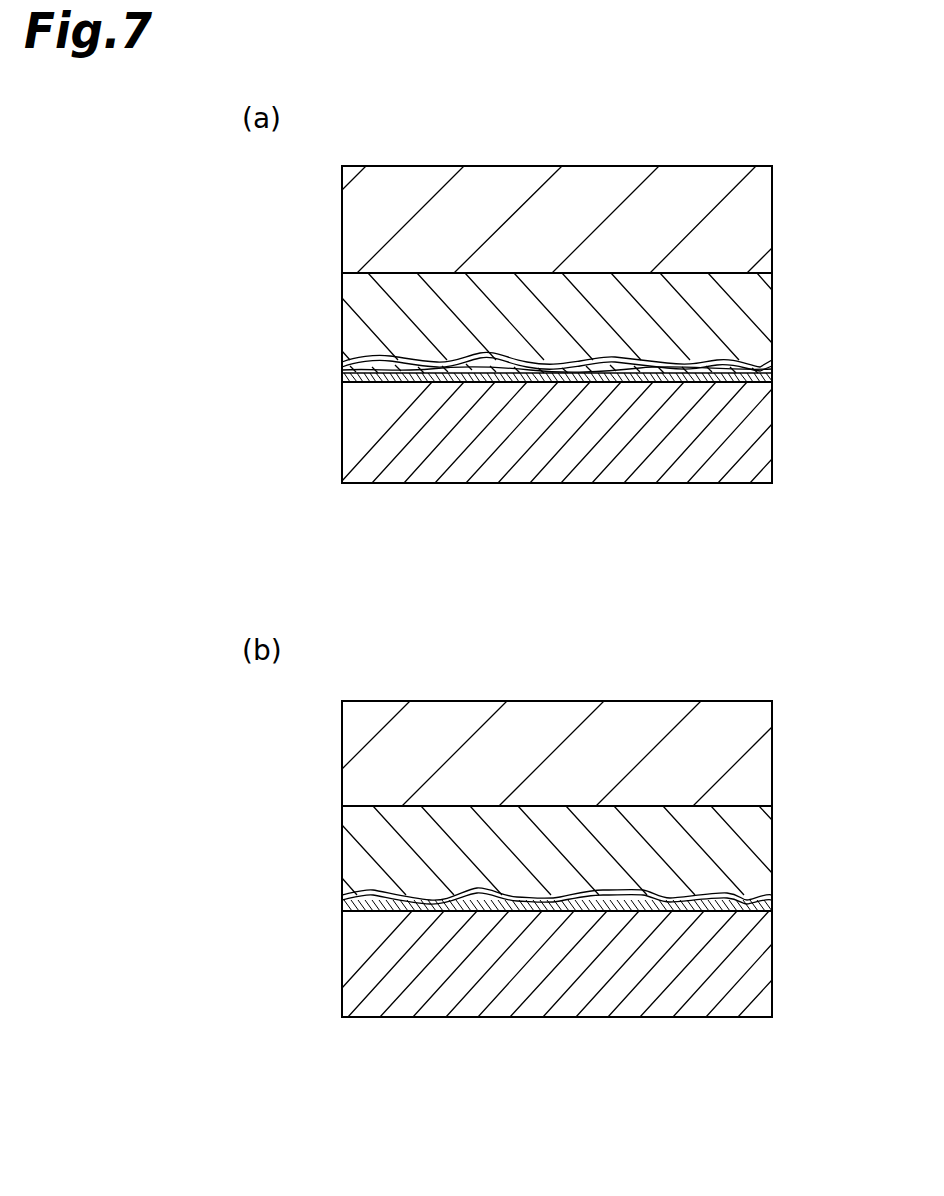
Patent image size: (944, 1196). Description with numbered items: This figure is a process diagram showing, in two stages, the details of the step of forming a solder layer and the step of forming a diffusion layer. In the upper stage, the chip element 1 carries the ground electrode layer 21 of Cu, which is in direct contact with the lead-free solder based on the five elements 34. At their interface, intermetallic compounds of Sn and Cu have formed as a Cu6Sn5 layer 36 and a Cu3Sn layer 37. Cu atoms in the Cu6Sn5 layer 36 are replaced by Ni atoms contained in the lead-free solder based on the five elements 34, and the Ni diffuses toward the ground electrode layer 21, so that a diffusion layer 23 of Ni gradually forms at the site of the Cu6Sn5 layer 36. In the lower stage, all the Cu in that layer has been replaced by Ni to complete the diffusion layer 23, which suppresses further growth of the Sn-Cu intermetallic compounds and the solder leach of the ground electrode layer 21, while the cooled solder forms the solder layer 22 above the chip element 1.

The chip element 1 is at (757, 222).
The ground electrode layer 21 is at (757, 298).
The solder layer 22 is at (757, 965).
The diffusion layer 23 is at (770, 379).
The lead-free solder based on the five elements 34 is at (757, 430).
The Cu6Sn5 layer 36 is at (770, 372).
The Cu3Sn layer 37 is at (770, 362).